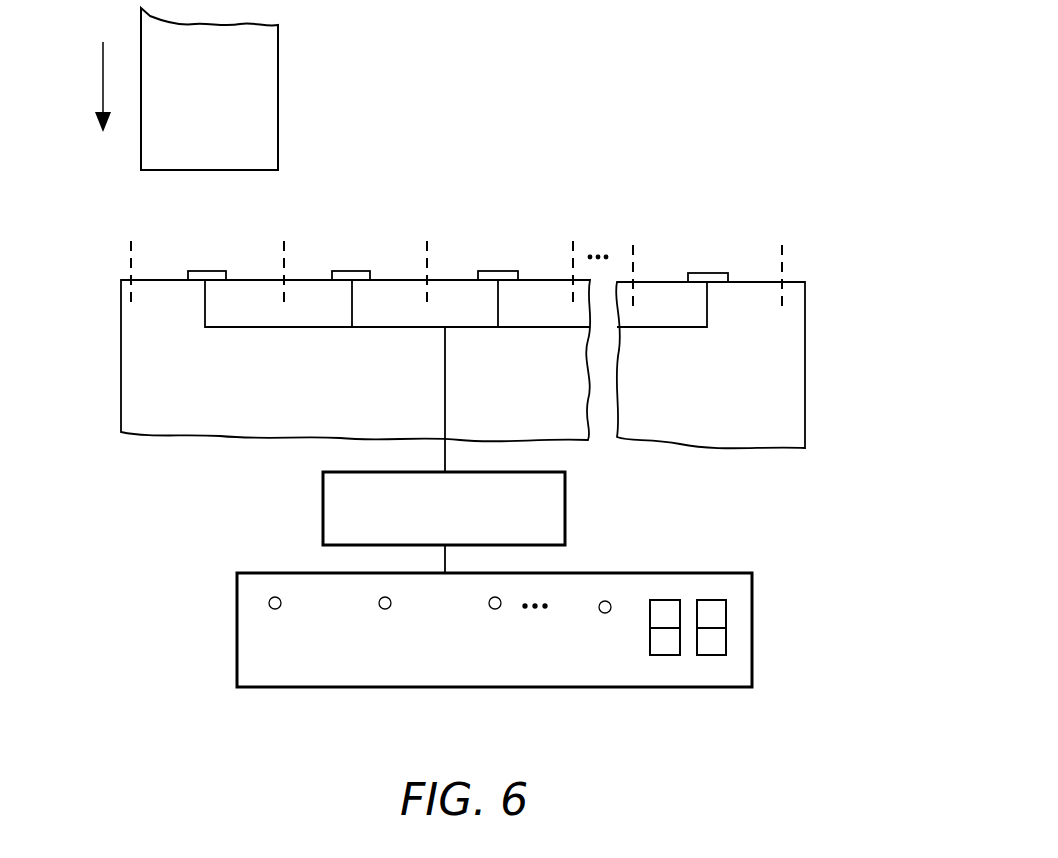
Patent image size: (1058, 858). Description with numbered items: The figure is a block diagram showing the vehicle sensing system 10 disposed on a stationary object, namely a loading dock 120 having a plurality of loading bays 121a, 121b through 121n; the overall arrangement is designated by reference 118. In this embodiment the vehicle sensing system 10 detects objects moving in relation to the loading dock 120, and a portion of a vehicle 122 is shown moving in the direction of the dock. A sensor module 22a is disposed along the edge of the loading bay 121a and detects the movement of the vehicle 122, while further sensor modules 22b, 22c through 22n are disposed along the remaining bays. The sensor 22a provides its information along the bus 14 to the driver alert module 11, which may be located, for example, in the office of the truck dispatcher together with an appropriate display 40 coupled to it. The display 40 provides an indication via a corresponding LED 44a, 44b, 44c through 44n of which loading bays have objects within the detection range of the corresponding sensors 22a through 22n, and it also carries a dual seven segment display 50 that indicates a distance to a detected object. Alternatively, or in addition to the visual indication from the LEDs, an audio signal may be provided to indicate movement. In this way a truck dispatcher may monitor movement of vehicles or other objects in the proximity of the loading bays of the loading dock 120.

The vehicle sensing system 10 is at (131, 550).
The driver alert module 11 is at (567, 508).
The bus 14 is at (312, 330).
The sensor module 22a is at (200, 271).
The sensor module 22b is at (355, 271).
The sensor module 22c is at (502, 271).
The sensor module 22n is at (712, 273).
The display 40 is at (755, 665).
The LED 44a is at (268, 608).
The LED 44b is at (387, 609).
The LED 44c is at (497, 609).
The LED 44n is at (607, 613).
The dual seven segment display 50 is at (725, 603).
The loading dock system 118 is at (792, 64).
The loading dock 120 is at (805, 338).
The loading bay 121a is at (245, 225).
The loading bay 121b is at (386, 230).
The loading bay 121n is at (738, 228).
The vehicle 122 is at (278, 45).